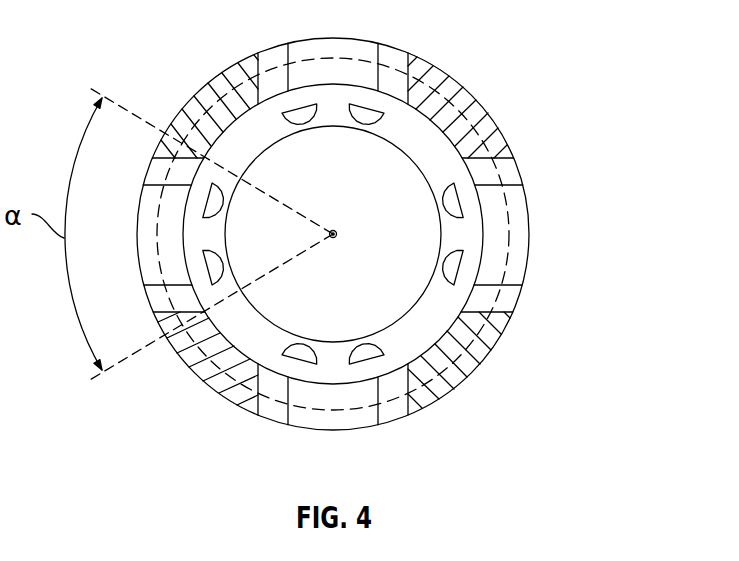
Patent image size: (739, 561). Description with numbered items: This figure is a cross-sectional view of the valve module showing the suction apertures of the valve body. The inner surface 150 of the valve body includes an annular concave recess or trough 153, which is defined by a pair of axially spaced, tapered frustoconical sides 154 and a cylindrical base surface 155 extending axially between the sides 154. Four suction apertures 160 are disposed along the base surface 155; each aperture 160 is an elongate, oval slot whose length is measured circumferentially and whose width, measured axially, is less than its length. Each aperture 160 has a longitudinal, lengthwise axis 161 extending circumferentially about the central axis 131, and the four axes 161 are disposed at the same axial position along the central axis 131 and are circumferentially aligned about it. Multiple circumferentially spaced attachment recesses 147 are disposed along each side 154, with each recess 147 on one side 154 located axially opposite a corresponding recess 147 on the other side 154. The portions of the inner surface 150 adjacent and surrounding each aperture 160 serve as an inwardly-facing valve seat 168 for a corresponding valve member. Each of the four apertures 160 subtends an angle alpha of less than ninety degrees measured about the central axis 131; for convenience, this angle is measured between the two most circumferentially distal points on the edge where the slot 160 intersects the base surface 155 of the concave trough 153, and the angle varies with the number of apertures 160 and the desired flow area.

The central axis 131 is at (336, 240).
The attachment recess 147 is at (218, 75).
The inner surface 150 is at (228, 254).
The trough 153 is at (403, 328).
The frustoconical side 154 is at (476, 373).
The cylindrical base surface 155 is at (435, 336).
The suction aperture 160 is at (397, 53).
The longitudinal axis 161 is at (302, 63).
The valve seat 168 is at (323, 88).